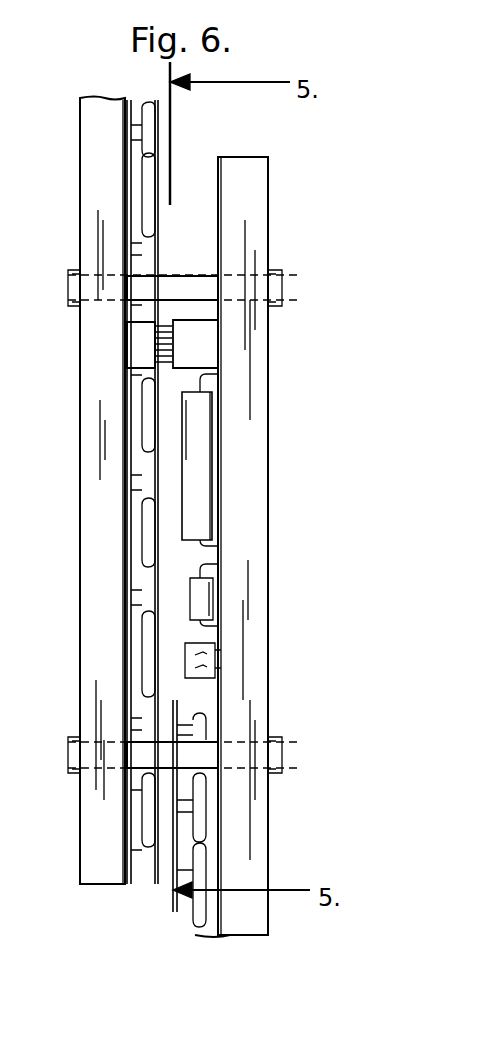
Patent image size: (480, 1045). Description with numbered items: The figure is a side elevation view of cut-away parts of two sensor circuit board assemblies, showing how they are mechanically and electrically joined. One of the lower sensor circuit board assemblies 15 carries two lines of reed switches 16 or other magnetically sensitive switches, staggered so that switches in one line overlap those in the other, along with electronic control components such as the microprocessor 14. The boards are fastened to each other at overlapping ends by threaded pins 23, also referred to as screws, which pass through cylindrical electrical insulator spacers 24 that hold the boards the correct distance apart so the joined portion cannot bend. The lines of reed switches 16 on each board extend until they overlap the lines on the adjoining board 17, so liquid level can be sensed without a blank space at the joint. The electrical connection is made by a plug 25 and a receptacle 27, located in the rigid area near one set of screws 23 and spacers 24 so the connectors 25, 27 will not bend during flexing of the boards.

The microprocessor 14 is at (206, 497).
The lower sensor circuit board assembly 15 is at (96, 156).
The reed switches 16 is at (143, 567).
The right board / panel 17 is at (258, 632).
The threaded pins 23 is at (280, 276).
The cylindrical electrical insulator spacers 24 is at (183, 275).
The plug connector 25 is at (132, 345).
The receptacle connector 27 is at (212, 340).